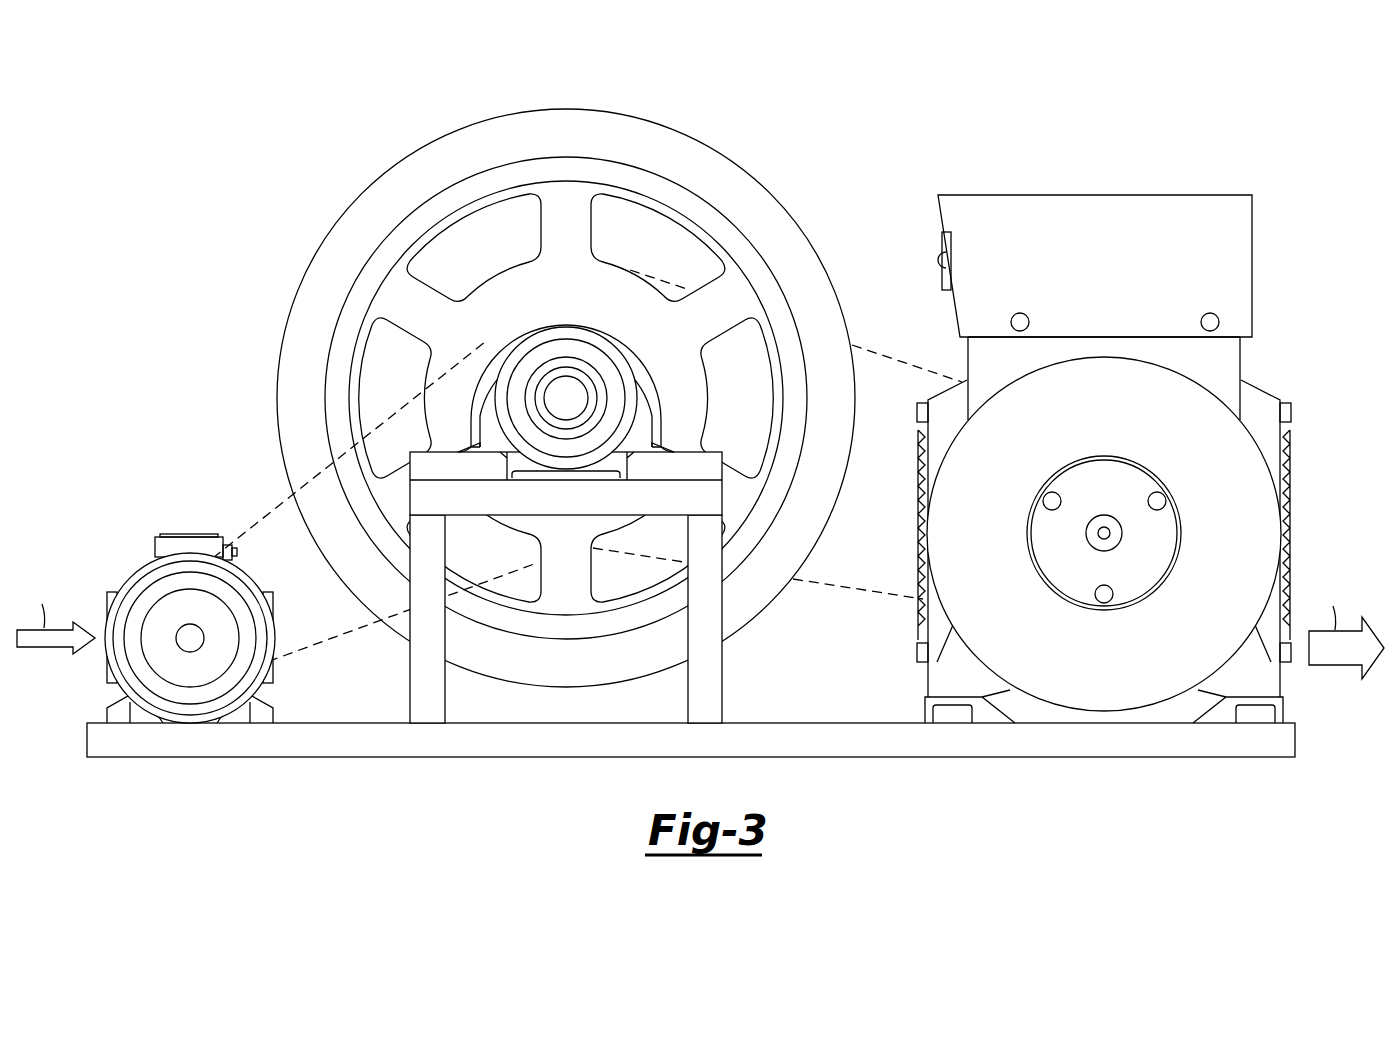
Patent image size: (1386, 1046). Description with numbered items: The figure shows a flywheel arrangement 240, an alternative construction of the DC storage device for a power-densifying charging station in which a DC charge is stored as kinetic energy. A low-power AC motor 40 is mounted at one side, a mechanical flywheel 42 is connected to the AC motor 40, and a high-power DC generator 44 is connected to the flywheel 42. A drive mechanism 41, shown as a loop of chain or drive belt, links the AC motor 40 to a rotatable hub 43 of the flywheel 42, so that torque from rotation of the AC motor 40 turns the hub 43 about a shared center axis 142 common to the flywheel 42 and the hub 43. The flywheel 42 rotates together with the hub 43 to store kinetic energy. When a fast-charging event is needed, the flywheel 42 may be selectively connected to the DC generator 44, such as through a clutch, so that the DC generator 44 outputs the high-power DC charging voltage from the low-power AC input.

The flywheel arrangement 240 is at (1140, 135).
The low-power AC motor 40 is at (188, 692).
The drive mechanism 41 is at (300, 648).
The mechanical flywheel 42 is at (703, 166).
The rotatable hub 43 is at (517, 313).
The high-power DC generator 44 is at (1102, 673).
The shared center axis 142 is at (566, 398).